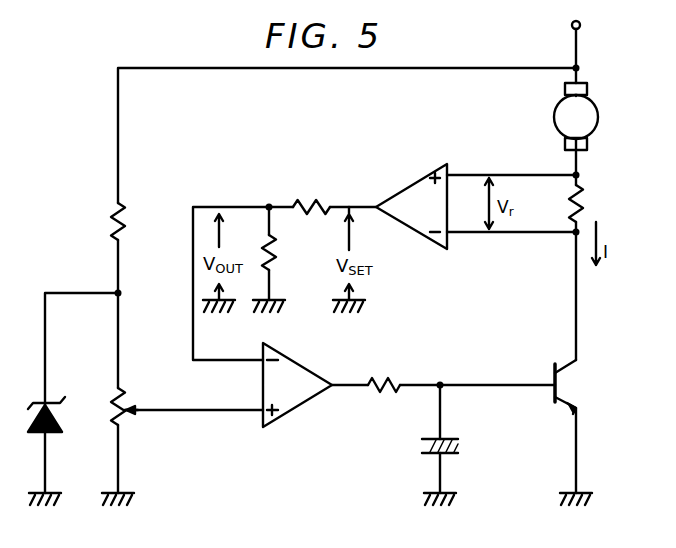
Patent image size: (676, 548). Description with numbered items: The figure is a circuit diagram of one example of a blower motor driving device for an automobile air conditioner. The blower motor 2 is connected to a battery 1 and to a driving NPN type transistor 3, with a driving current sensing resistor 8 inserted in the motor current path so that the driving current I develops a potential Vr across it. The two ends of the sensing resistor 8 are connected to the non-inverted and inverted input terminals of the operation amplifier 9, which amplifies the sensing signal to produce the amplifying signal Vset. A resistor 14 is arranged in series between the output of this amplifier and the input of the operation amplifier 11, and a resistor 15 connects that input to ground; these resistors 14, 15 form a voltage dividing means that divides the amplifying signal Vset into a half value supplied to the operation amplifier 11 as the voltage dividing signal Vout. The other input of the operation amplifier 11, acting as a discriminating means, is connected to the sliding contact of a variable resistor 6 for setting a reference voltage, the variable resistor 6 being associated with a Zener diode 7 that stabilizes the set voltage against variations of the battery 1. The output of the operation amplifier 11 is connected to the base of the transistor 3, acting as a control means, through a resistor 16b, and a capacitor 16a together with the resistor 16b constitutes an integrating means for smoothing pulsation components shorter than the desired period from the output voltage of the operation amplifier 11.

The battery 1 is at (571, 26).
The blower motor 2 is at (598, 121).
The driving NPN type transistor 3 is at (566, 391).
The variable resistor 6 is at (125, 418).
The Zener diode 7 is at (58, 436).
The driving current sensing resistor 8 is at (585, 200).
The operation amplifier 9 is at (412, 181).
The operation amplifier 11 is at (299, 406).
The resistor 14 is at (308, 201).
The resistor 15 is at (275, 262).
The capacitor 16a is at (460, 447).
The resistor 16b is at (393, 381).